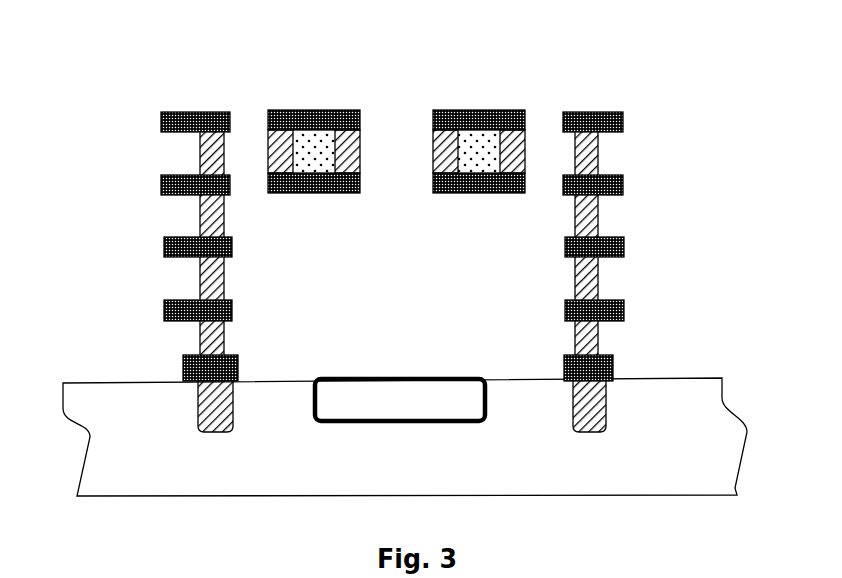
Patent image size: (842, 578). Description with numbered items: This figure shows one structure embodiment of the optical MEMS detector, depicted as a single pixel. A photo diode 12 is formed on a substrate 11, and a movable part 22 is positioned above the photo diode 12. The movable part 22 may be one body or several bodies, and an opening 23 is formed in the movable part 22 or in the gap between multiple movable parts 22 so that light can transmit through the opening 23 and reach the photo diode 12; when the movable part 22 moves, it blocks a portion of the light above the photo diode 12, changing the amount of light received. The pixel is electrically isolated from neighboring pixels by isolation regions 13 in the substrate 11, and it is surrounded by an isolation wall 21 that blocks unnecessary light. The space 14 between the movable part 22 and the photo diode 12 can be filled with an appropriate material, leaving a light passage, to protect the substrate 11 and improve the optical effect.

The substrate 11 is at (277, 483).
The photo diode 12 is at (384, 413).
The isolation region 13 is at (606, 395).
The space 14 is at (381, 322).
The isolation wall 21 is at (655, 108).
The movable part 22 is at (267, 100).
The opening 23 is at (392, 163).